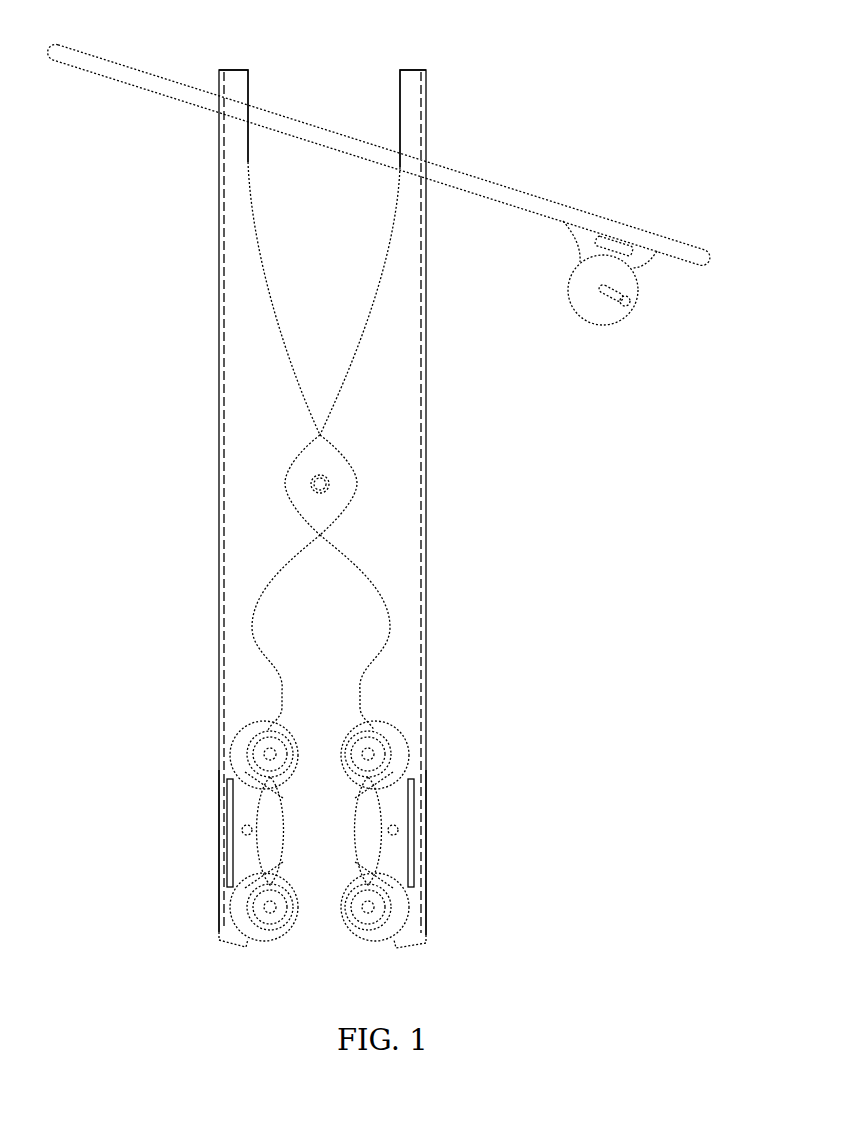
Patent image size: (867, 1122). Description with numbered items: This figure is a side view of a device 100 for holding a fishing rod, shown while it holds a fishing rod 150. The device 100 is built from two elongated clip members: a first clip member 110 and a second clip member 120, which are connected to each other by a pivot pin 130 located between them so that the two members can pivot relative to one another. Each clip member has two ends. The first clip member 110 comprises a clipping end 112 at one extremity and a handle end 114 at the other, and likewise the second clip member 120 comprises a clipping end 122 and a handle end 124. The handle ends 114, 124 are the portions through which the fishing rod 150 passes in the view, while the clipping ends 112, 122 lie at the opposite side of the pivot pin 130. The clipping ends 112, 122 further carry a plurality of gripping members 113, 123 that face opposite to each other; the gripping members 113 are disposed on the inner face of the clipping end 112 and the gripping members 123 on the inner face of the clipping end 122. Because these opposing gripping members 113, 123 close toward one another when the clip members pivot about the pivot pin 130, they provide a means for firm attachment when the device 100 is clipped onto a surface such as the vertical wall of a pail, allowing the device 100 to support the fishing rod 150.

The device 100 is at (463, 50).
The first clip member 110 is at (456, 509).
The clipping end 112 is at (425, 840).
The gripping members 113 is at (386, 735).
The handle end 114 is at (413, 133).
The second clip member 120 is at (192, 508).
The clipping end 122 is at (222, 820).
The gripping members 123 is at (253, 735).
The handle end 124 is at (237, 133).
The pivot pin 130 is at (328, 482).
The fishing rod 150 is at (561, 207).